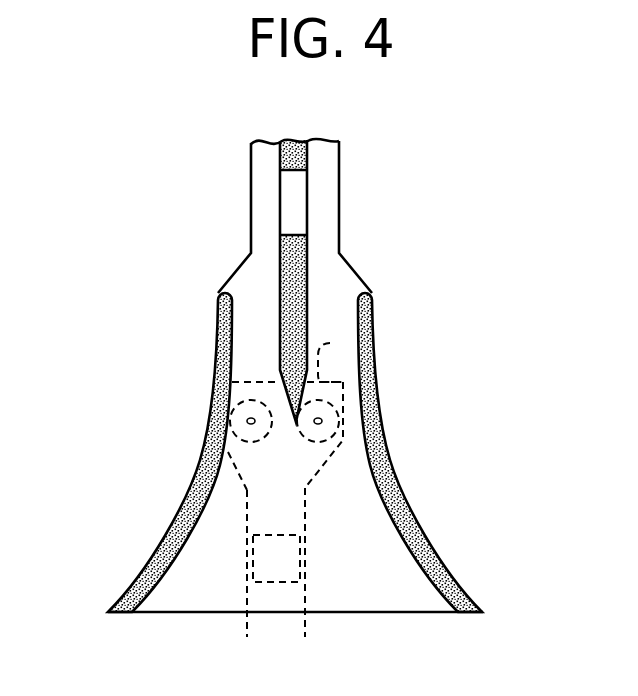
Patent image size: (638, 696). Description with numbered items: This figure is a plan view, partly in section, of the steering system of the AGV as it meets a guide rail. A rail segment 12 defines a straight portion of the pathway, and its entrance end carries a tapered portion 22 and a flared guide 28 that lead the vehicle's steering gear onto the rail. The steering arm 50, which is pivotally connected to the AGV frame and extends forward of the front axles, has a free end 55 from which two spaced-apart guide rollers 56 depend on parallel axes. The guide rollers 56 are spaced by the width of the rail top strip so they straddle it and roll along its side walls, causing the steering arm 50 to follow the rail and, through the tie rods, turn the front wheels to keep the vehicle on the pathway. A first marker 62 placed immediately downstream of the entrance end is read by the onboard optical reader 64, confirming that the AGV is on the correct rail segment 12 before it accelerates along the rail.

The rail segment 12 is at (308, 295).
The tapered portion 22 is at (298, 392).
The flared guide 28 is at (160, 550).
The steering arm 50 is at (285, 525).
The free end 55 is at (330, 343).
The guide rollers 56 is at (233, 436).
The first marker 62 is at (301, 202).
The optical reader 64 is at (287, 560).